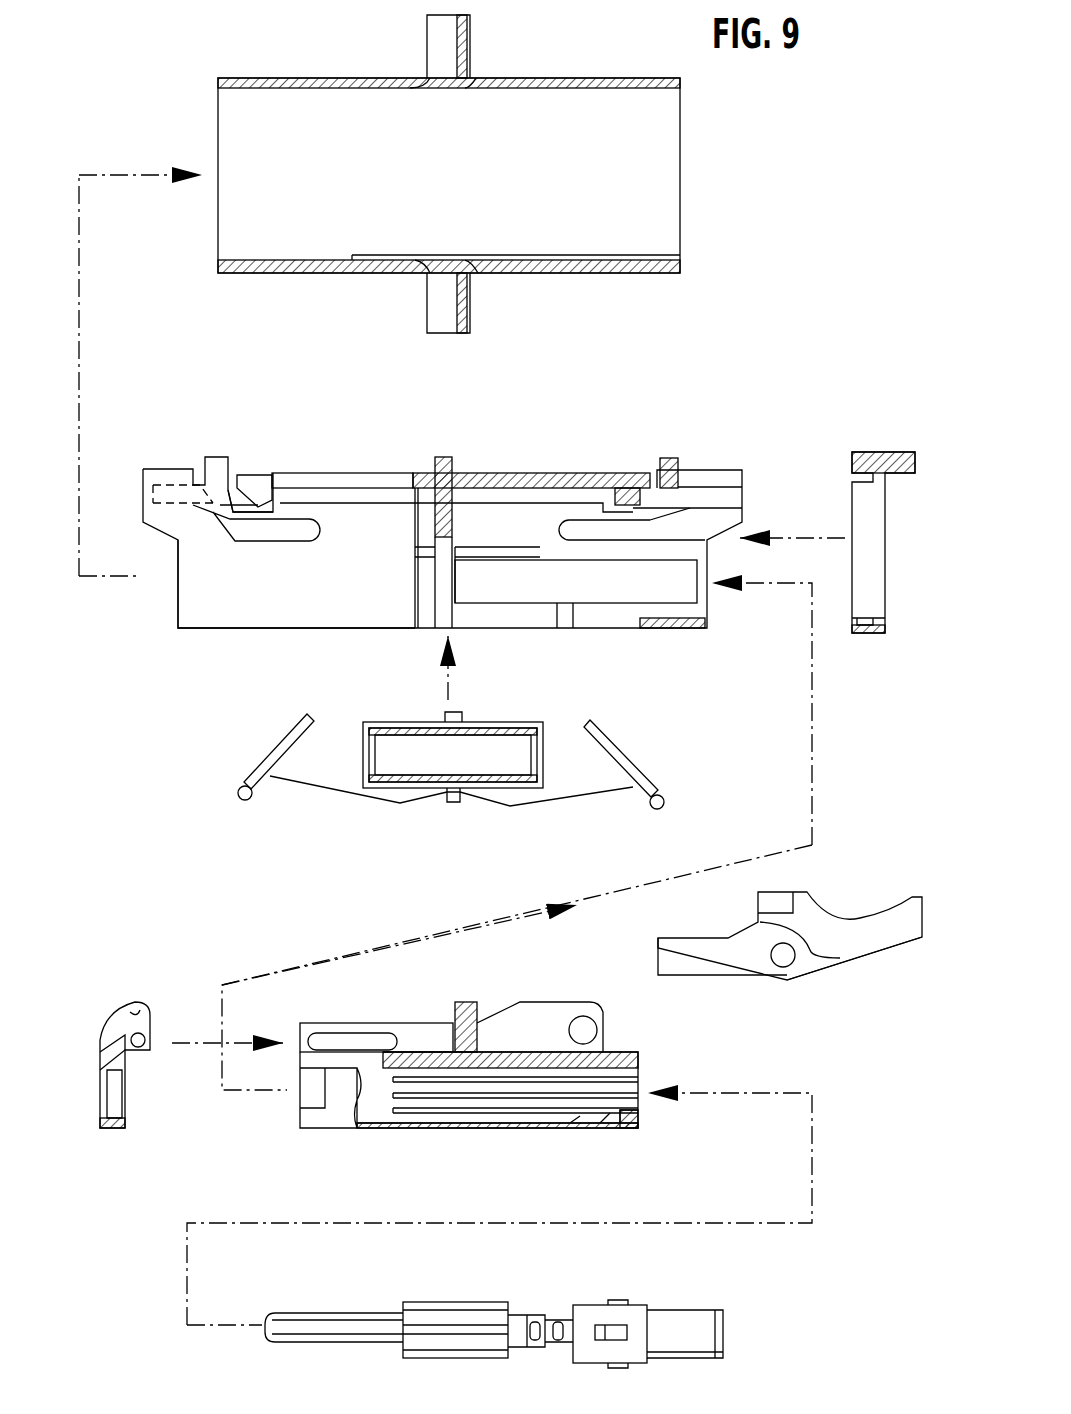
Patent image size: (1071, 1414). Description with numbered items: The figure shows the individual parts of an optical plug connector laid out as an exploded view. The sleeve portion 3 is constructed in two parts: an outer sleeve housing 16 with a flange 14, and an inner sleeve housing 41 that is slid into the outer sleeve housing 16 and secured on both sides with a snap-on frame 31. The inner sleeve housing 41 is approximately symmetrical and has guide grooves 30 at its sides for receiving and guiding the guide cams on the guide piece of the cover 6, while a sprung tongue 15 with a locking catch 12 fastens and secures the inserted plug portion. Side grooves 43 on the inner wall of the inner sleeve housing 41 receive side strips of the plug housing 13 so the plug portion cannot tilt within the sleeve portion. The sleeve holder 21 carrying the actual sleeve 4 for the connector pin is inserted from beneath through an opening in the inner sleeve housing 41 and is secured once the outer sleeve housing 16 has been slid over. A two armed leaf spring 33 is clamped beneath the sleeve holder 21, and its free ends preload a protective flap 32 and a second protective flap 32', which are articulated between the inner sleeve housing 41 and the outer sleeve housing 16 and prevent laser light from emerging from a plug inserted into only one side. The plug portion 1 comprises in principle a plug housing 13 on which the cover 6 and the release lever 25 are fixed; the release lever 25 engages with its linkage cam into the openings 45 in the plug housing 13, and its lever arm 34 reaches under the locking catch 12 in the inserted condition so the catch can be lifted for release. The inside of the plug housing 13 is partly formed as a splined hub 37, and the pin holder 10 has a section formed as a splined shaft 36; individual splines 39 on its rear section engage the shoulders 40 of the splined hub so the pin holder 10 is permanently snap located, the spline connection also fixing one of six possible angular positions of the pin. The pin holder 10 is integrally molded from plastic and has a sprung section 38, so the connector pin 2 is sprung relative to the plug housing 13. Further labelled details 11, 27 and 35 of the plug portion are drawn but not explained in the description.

The plug portion 1 is at (285, 1215).
The connector pin 2 is at (326, 1320).
The sleeve portion 3 is at (545, 322).
The sleeve 4 is at (401, 722).
The cover 6 is at (105, 1066).
The pin holder 10 is at (773, 1318).
The connector body 11 is at (463, 1005).
The locking catch 12 is at (627, 470).
The plug housing 13 is at (665, 1128).
The flange 14 is at (468, 48).
The sprung tongue 15 is at (500, 470).
The outer sleeve housing 16 is at (298, 78).
The sleeve holder 21 is at (511, 725).
The release lever 25 is at (873, 935).
The slot 27 is at (379, 1045).
The guide grooves 30 is at (240, 527).
The snap-on frame 31 is at (870, 455).
The protective flap 32 is at (257, 744).
The protective flap 32' is at (640, 752).
The two armed leaf spring 33 is at (326, 795).
The lever arm 34 is at (660, 942).
The pivot hole 35 is at (785, 968).
The splined shaft 36 is at (458, 1318).
The splined hub 37 is at (529, 1112).
The sprung section 38 is at (535, 1317).
The individual splines 39 is at (616, 1303).
The shoulders 40 is at (603, 1128).
The inner sleeve housing 41 is at (225, 600).
The side grooves 43 is at (606, 585).
The openings 45 is at (584, 1016).